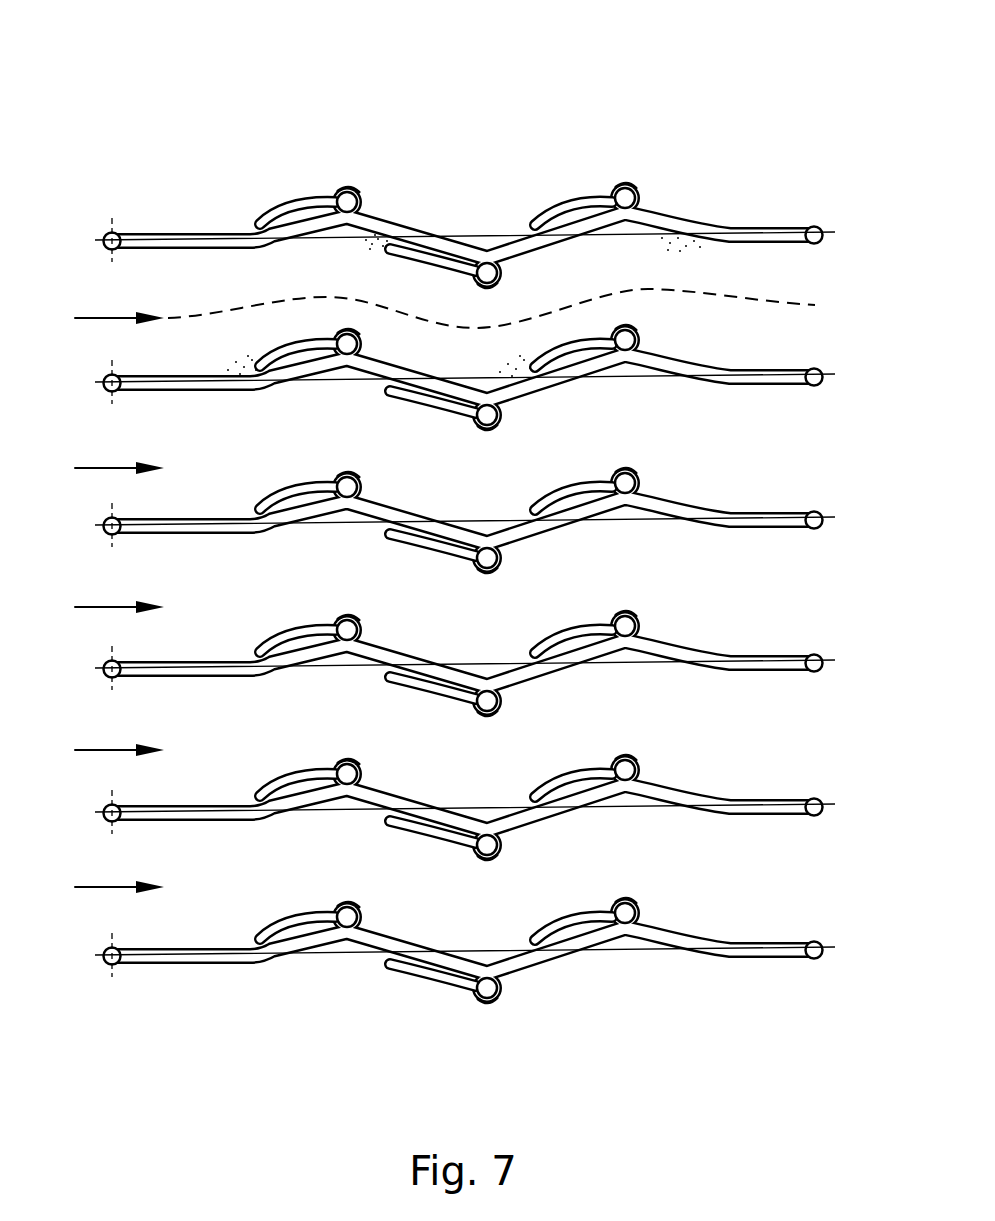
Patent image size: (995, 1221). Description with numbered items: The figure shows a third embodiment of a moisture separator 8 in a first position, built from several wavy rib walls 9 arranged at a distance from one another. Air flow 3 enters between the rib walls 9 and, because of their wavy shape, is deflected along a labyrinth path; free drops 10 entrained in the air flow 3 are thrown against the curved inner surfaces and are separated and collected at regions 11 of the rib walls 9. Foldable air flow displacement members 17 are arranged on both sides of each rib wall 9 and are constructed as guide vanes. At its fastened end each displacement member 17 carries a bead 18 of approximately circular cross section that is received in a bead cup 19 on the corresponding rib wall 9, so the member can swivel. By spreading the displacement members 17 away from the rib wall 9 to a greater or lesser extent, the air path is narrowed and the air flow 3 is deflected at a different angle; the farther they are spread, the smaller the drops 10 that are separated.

The air flow 3 is at (102, 323).
The moisture separator 8 is at (498, 140).
The rib wall 9 is at (676, 210).
The free drops 10 is at (363, 243).
The regions of the rib walls 11 is at (378, 227).
The air flow displacement member 17 is at (280, 200).
The bead 18 is at (630, 187).
The bead cup 19 is at (647, 190).